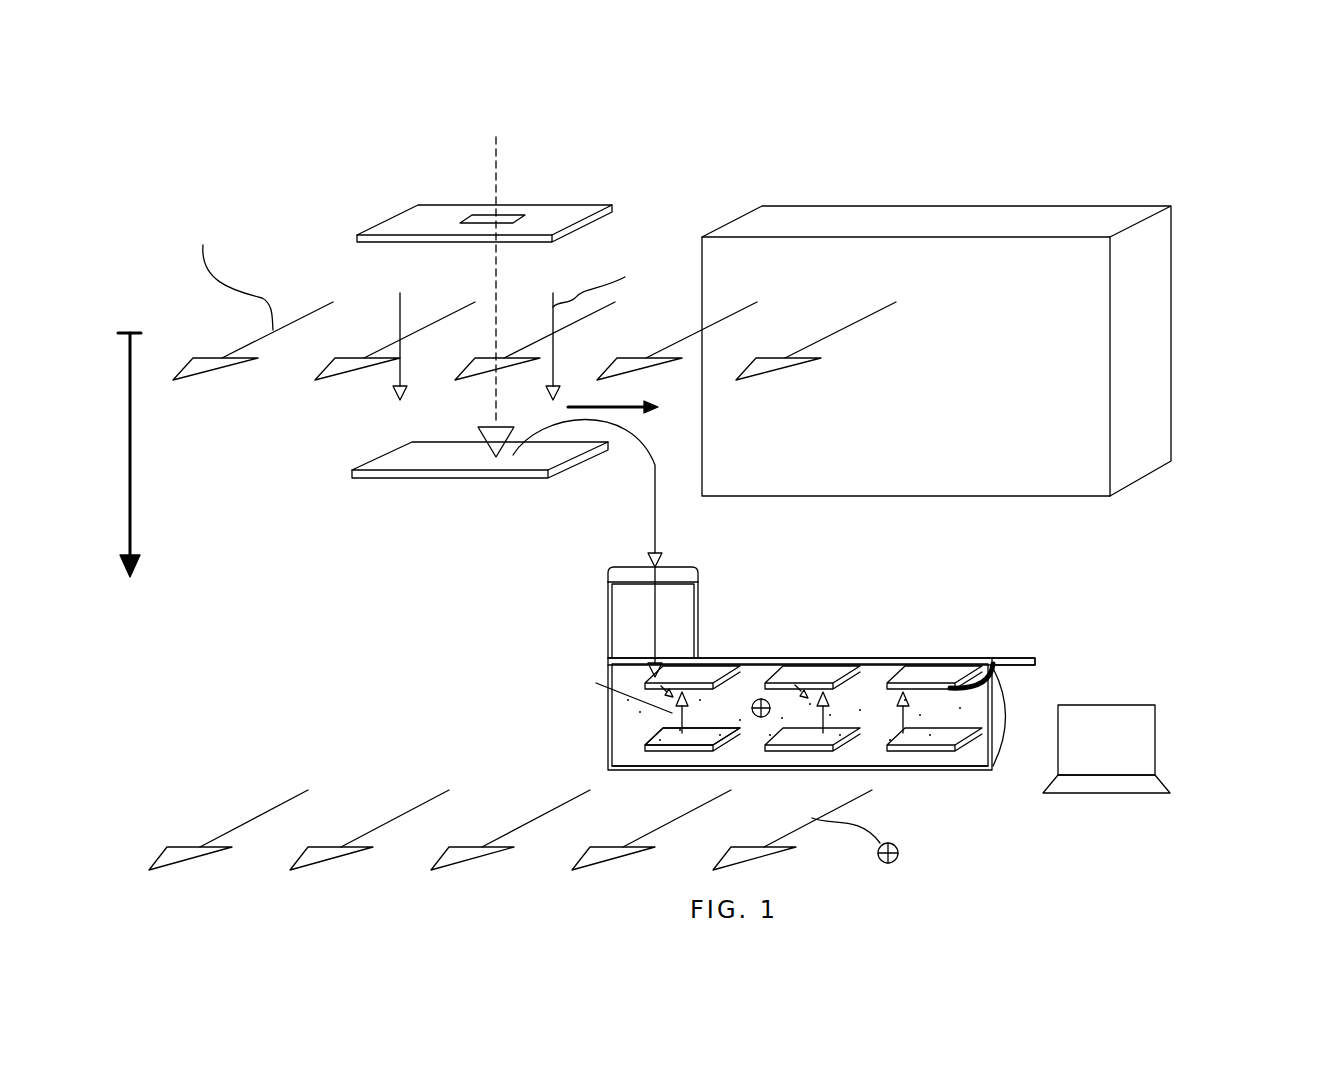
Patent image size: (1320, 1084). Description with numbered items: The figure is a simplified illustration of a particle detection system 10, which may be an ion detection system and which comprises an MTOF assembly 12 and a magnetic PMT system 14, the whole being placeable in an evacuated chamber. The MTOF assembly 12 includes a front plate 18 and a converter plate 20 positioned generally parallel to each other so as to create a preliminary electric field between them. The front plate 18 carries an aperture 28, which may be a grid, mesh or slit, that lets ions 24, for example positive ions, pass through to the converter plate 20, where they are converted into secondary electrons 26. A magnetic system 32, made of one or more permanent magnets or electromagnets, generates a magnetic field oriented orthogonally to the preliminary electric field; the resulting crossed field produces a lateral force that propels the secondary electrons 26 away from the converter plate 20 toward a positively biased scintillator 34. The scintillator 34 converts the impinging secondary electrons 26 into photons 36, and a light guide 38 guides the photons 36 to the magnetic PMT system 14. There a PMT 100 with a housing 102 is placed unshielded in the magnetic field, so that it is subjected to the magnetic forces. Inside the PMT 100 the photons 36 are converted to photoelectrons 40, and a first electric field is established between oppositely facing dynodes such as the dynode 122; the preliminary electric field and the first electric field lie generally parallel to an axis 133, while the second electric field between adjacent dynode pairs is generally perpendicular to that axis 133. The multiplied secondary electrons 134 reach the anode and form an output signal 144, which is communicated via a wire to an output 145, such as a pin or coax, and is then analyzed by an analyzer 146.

The particle detection system 10 is at (1237, 163).
The MTOF assembly 12 is at (289, 225).
The magnetic PMT system 14 is at (296, 605).
The front plate 18 is at (447, 222).
The converter plate 20 is at (423, 462).
The ions 24 is at (497, 182).
The secondary electrons 26 is at (655, 466).
The aperture 28 is at (484, 215).
The magnetic system 32 is at (1147, 291).
The scintillator 34 is at (608, 574).
The photons 36 is at (657, 618).
The light guide 38 is at (608, 626).
The photoelectrons 40 is at (707, 725).
The PMT 100 is at (612, 735).
The housing 102 is at (890, 656).
The dynode 122 is at (738, 732).
The axis 133 is at (154, 455).
The multiplied secondary electrons 134 is at (865, 732).
The output signal 144 is at (985, 660).
The output 145 is at (1035, 660).
The analyzer 146 is at (1147, 717).